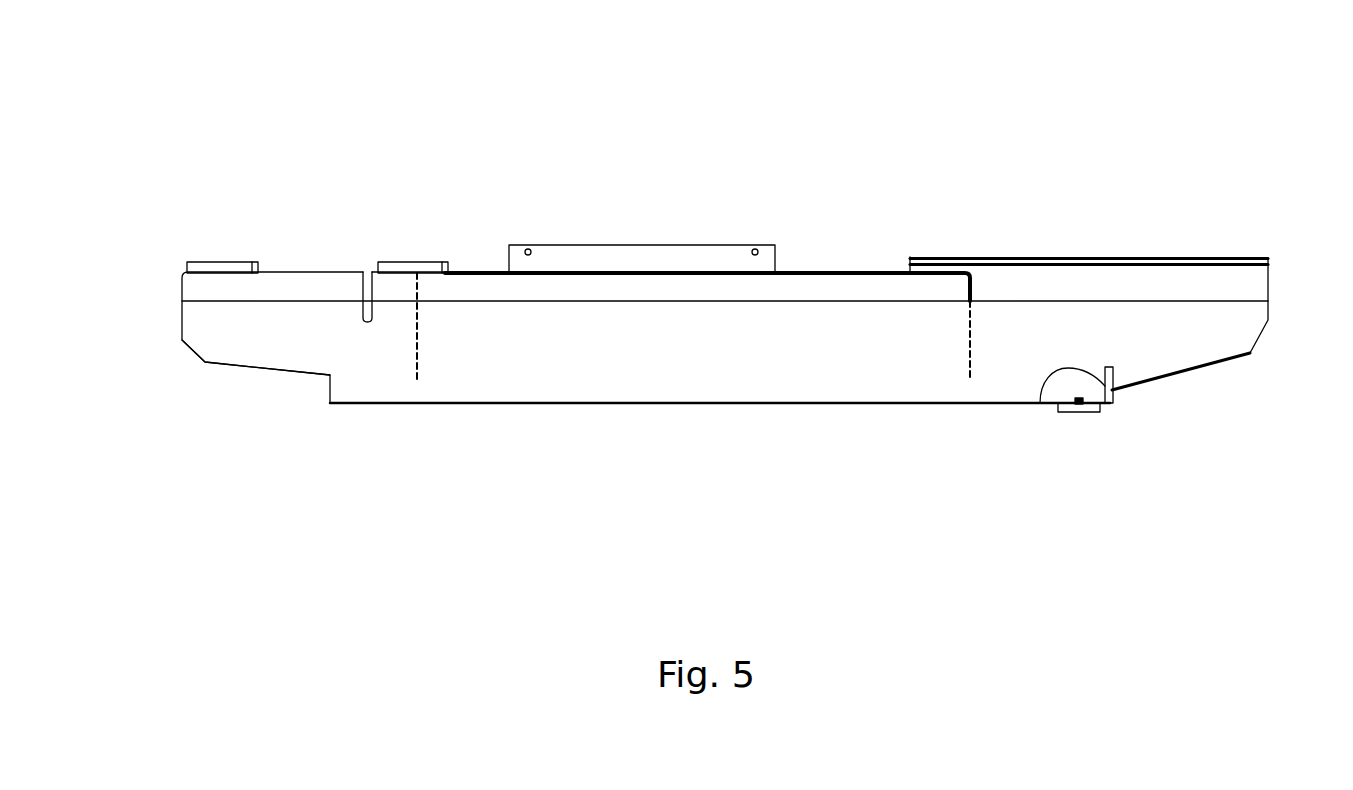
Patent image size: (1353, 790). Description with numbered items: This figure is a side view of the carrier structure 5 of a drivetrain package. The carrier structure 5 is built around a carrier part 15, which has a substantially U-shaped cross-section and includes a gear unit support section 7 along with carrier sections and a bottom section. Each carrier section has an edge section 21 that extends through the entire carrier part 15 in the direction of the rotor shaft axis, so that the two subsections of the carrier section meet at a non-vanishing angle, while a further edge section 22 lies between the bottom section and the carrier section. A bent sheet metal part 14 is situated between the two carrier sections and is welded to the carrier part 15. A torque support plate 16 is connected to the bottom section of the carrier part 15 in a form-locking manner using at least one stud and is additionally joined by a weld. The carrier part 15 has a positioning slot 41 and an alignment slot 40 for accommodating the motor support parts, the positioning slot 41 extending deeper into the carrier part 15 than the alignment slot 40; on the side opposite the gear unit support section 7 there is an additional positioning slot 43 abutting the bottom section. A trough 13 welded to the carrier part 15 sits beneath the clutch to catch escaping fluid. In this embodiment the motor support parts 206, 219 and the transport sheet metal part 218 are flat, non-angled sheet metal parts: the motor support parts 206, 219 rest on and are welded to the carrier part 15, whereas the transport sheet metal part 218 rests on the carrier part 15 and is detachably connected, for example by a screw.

The carrier structure 5 is at (174, 150).
The motor support part 206 is at (232, 263).
The positioning slot 41 is at (366, 255).
The motor support part 219 is at (430, 263).
The trough 13 is at (635, 259).
The sheet metal part 14 is at (925, 277).
The gear unit support section 7 is at (1075, 259).
The edge section 21 is at (1215, 288).
The carrier part 15 is at (1208, 328).
The alignment slot 40 is at (208, 283).
The torque support plate 16 is at (425, 403).
The edge section 22 is at (911, 419).
The additional positioning slot 43 is at (1124, 402).
The transport sheet metal part 218 is at (1085, 412).